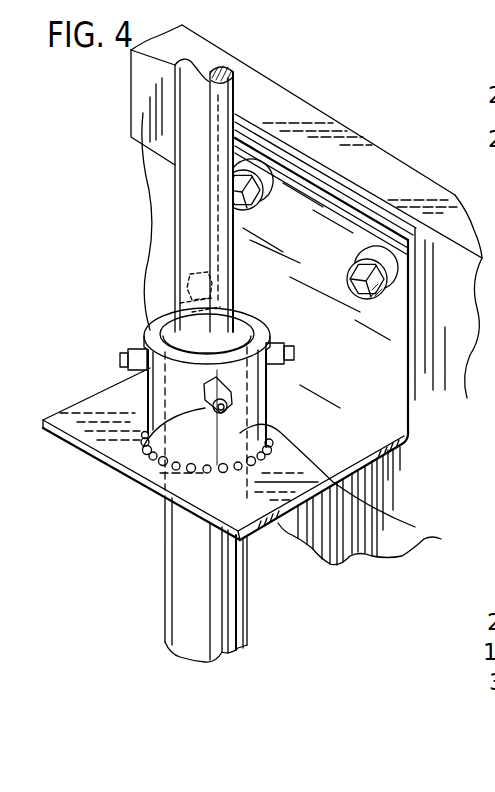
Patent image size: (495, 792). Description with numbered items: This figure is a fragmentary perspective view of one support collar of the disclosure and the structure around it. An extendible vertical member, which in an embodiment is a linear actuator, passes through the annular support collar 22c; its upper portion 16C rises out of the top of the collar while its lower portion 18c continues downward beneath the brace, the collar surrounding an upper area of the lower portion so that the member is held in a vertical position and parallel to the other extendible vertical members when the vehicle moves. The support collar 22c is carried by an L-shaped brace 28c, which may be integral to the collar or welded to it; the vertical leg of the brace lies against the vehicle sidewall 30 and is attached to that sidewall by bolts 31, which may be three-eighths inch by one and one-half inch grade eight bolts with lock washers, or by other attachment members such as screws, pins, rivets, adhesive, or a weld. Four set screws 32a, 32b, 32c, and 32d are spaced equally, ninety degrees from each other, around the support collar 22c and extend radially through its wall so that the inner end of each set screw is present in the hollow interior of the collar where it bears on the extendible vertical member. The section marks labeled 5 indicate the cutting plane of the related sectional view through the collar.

The upper portion 16C is at (235, 101).
The lower portion 18c is at (177, 555).
The support collar 22c is at (441, 540).
The brace 28c is at (107, 393).
The vehicle sidewall 30 is at (453, 300).
The bolts 31 is at (252, 182).
The set screw 32a is at (120, 357).
The set screw 32b is at (153, 463).
The set screw 32c is at (293, 374).
The set screw 32d is at (212, 279).
The section line 5- 5 is at (140, 237).